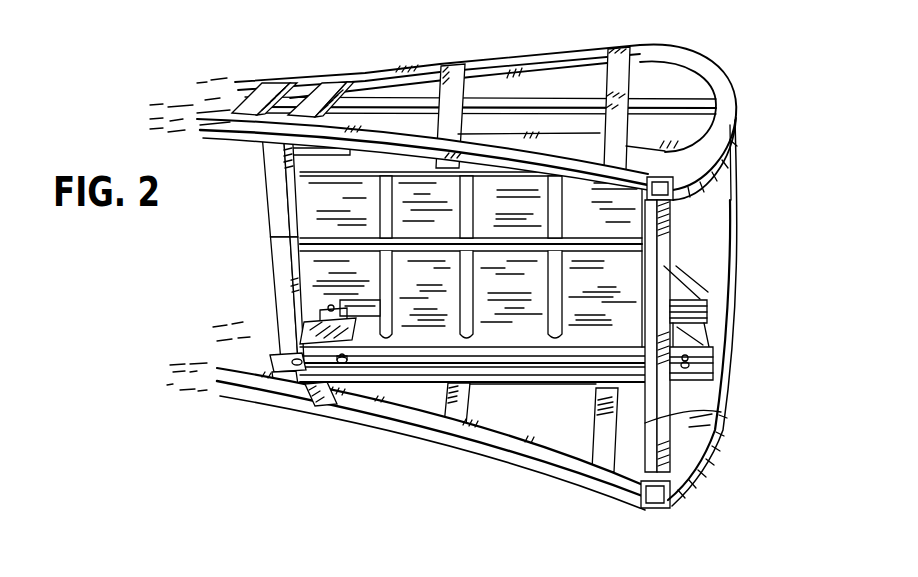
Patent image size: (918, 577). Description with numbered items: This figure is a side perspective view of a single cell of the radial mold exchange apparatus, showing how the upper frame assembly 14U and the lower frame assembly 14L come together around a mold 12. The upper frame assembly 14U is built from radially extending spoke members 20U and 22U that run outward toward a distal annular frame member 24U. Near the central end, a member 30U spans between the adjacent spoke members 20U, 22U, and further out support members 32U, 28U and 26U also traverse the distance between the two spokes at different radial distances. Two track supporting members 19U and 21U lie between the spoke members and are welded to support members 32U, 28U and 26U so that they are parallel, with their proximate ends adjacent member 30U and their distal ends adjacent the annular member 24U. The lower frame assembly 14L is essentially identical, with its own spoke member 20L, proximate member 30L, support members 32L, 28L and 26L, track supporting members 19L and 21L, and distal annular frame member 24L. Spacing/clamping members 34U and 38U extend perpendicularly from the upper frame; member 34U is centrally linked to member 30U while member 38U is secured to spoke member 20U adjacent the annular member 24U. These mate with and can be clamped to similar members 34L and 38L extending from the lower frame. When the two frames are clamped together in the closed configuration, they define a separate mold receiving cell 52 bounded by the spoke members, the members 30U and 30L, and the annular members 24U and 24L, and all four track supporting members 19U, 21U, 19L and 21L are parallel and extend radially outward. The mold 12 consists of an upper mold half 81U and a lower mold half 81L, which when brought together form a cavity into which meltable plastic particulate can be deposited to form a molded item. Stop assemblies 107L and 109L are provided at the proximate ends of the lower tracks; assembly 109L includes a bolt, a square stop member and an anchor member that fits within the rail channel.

The spoke member 20U is at (224, 127).
The member 30U is at (288, 82).
The support member 32U is at (333, 82).
The spoke member 22U is at (410, 76).
The support member 28U is at (456, 74).
The track supporting member 21U is at (510, 100).
The support member 26U is at (618, 50).
The track supporting member 19U is at (633, 143).
The upper frame assembly 14U is at (714, 72).
The distal annular frame member 24U is at (735, 128).
The mold receiving cell 52 is at (677, 209).
The mold 12 is at (621, 218).
The spacing/clamping member 38U is at (702, 300).
The track supporting member 21L is at (707, 305).
The distal annular frame member 24L is at (718, 370).
The spacing/clamping member 38L is at (718, 413).
The lower frame assembly 14L is at (690, 468).
The support member 26L is at (598, 442).
The track supporting member 19L is at (572, 386).
The support member 28L is at (472, 403).
The spoke member 20L is at (366, 422).
The support member 32L is at (312, 408).
The stop assembly 107L is at (290, 372).
The member 30L is at (272, 380).
The spacing/clamping member 34U is at (272, 226).
The spacing/clamping member 34L is at (273, 307).
The mold half 81U is at (381, 223).
The mold half 81L is at (381, 281).
The stop assembly 109L is at (333, 304).